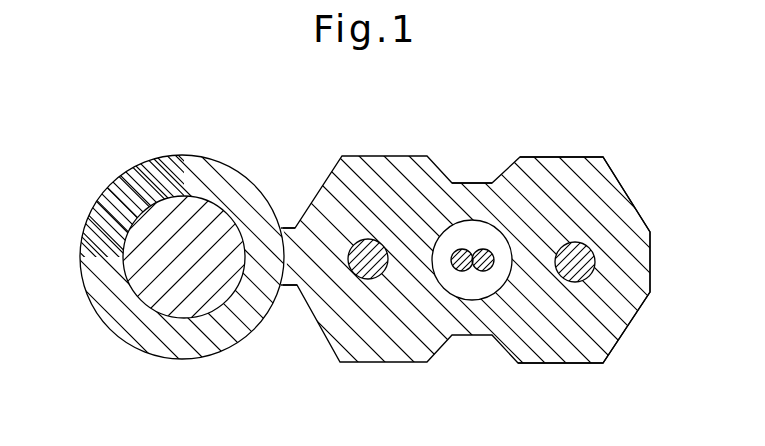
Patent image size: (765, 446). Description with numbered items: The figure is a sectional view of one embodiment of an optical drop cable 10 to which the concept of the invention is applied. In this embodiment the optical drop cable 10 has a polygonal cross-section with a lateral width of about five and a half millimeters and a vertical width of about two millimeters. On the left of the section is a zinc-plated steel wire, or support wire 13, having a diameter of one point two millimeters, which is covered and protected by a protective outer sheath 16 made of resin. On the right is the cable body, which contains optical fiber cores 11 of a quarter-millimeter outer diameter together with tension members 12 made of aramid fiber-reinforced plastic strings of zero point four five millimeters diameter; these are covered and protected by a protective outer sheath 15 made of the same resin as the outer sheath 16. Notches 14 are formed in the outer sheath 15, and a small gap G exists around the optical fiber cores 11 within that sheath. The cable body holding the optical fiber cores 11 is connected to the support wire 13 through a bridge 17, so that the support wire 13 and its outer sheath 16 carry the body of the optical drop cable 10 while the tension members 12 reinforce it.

The optical drop cable 10 is at (388, 128).
The optical fiber cores 11 is at (483, 250).
The tension members 12 is at (369, 253).
The zinc-plated steel wire (support wire) 13 is at (158, 237).
The notches 14 is at (467, 182).
The protective outer sheath 15 is at (613, 207).
The protective outer sheath 16 is at (115, 290).
The bridge 17 is at (285, 228).
The gap G is at (498, 280).